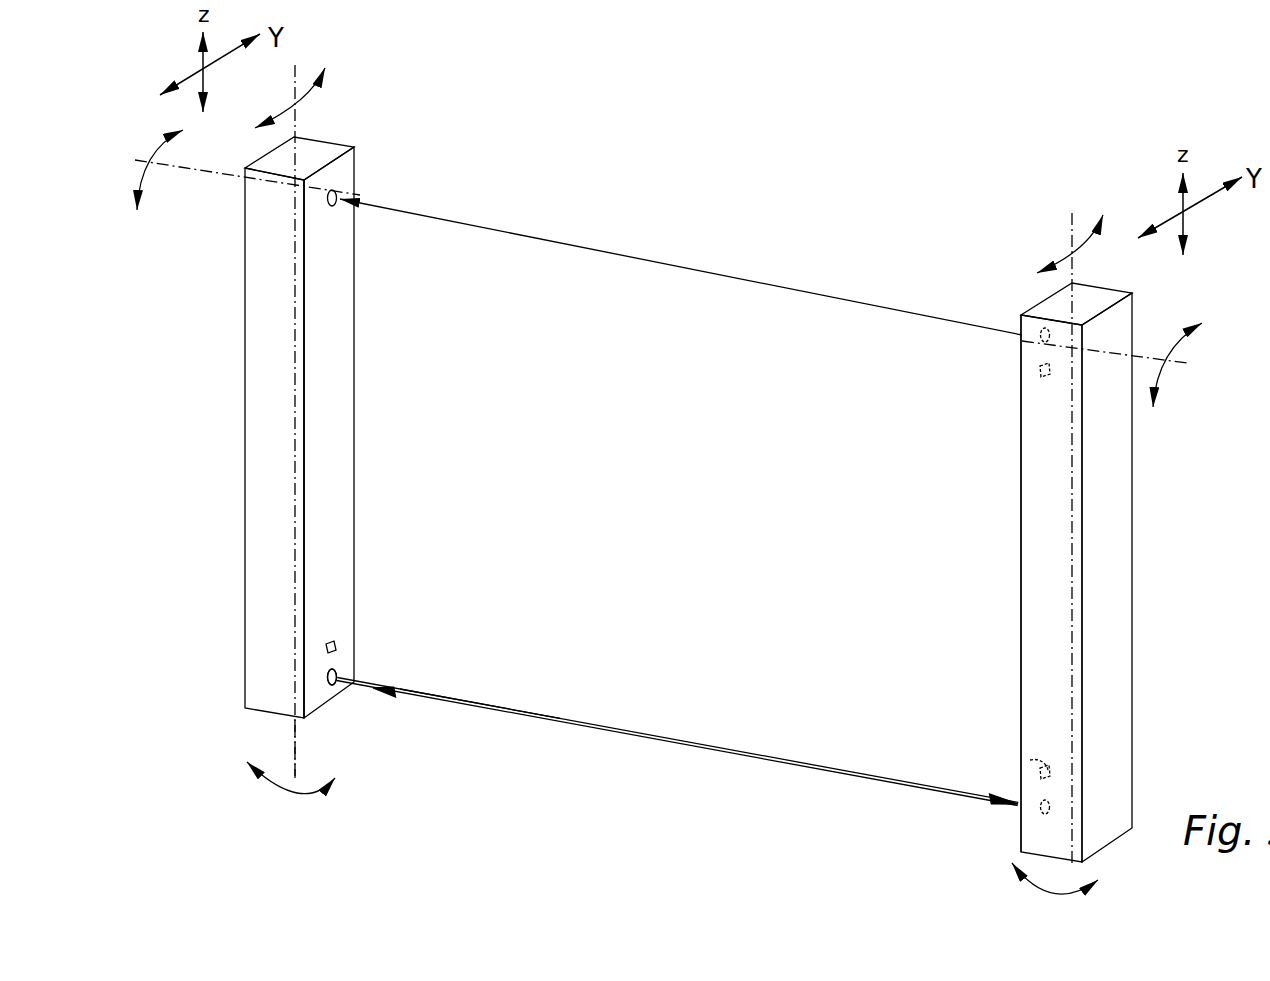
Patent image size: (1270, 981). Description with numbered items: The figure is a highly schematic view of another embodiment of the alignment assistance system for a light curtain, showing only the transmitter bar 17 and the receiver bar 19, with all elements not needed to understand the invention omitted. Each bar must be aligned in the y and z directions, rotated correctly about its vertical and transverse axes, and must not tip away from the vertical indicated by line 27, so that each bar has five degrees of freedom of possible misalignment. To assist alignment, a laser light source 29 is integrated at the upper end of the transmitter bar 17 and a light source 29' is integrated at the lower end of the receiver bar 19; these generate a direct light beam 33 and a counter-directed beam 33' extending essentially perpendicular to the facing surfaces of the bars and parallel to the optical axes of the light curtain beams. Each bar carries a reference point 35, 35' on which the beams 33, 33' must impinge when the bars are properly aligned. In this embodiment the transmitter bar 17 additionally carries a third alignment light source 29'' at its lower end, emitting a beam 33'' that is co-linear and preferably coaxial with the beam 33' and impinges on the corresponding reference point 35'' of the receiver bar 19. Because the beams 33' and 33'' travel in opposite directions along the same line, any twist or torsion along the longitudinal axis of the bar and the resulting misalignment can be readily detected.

The transmitter bar 17 is at (1125, 558).
The receiver bar 19 is at (262, 468).
The vertical line 27 is at (296, 766).
The alignment light source 29 is at (1000, 361).
The alignment light source 29' is at (402, 649).
The additional alignment light source 29'' is at (995, 829).
The direct light beam 33 is at (681, 267).
The counter-directed beam 33' is at (678, 735).
The light beam 33'' is at (491, 734).
The reference point 35 is at (390, 159).
The reference point 35' is at (992, 756).
The reference point 35'' is at (394, 705).